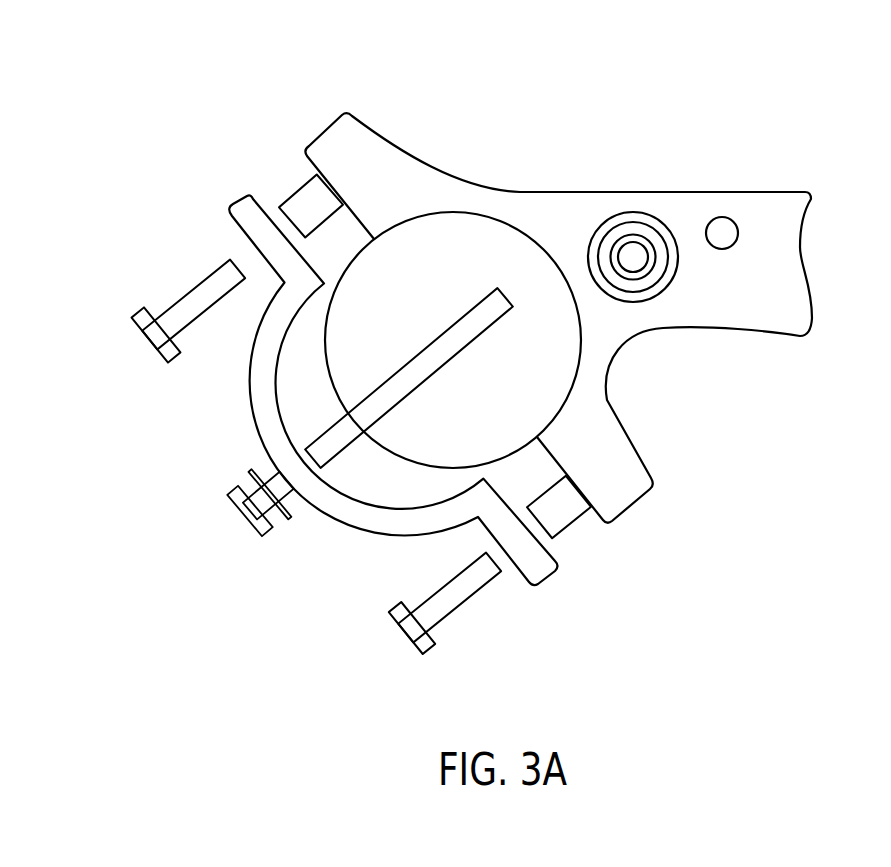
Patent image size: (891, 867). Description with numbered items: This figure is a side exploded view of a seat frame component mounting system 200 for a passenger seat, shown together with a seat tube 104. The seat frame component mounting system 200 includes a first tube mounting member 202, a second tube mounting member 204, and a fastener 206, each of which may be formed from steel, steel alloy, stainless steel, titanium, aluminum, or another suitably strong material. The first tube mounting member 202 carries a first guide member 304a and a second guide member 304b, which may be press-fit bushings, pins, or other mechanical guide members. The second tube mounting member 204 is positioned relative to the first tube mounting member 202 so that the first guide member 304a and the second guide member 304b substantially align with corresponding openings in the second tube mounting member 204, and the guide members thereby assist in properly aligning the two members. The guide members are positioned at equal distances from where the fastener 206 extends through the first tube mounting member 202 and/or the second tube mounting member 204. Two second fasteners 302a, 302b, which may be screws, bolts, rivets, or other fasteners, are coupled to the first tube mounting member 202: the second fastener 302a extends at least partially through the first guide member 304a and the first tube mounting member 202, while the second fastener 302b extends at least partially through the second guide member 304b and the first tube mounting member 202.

The seat frame component mounting system 200 is at (503, 102).
The first tube mounting member 202 is at (622, 481).
The second tube mounting member 204 is at (353, 514).
The fastener 206 is at (250, 516).
The shaft slot 104 is at (451, 467).
The second fastener 302a is at (155, 338).
The second fastener 302b is at (413, 629).
The first guide member 304a is at (296, 208).
The second guide member 304b is at (561, 517).